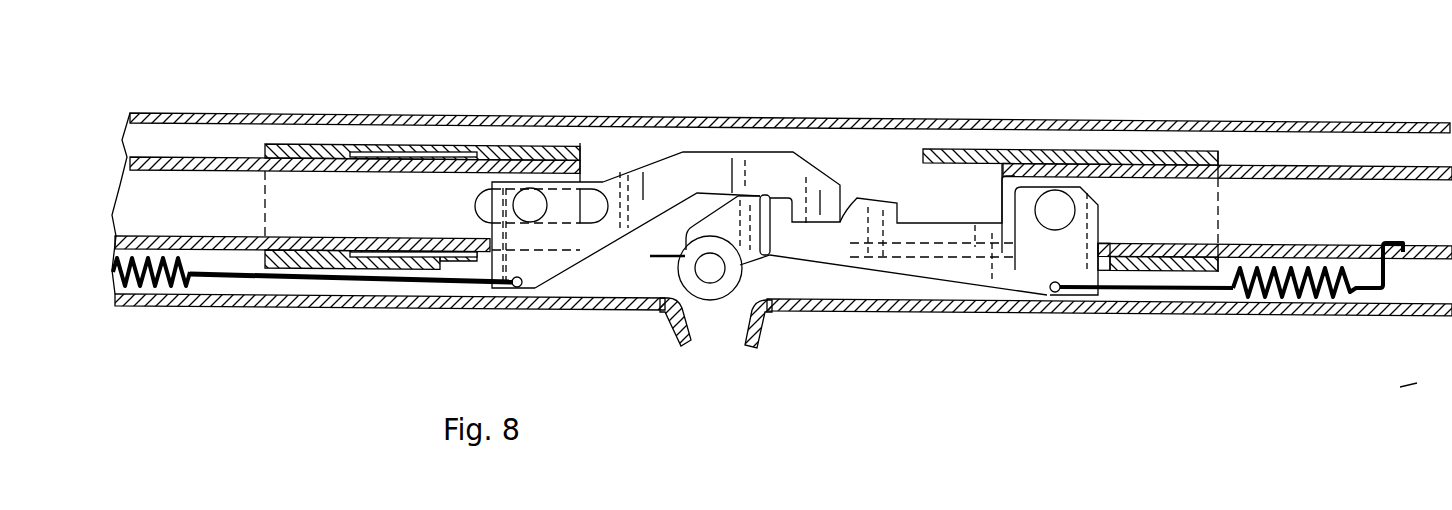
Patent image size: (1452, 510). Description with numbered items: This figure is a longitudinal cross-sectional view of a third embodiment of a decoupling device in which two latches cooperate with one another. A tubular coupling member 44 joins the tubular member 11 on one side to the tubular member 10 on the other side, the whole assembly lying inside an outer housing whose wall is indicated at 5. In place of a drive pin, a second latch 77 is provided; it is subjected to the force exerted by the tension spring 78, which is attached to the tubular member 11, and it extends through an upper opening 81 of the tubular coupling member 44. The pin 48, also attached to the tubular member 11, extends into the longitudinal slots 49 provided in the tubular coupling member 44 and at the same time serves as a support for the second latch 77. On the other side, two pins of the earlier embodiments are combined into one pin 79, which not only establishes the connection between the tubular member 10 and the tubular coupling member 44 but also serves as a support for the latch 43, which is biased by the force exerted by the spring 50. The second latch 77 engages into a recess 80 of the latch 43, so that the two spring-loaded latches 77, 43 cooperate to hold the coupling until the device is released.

The outer tube 5 is at (797, 125).
The tubular member 10 is at (1430, 257).
The tubular member 11 is at (205, 160).
The latch 43 is at (880, 217).
The tubular coupling member 44 is at (1148, 158).
The pin 48 is at (532, 202).
The longitudinal slots 49 is at (595, 207).
The spring 50 is at (1300, 272).
The second latch 77 is at (715, 172).
The tension spring 78 is at (183, 277).
The pin 79 is at (1055, 208).
The recess 80 is at (841, 222).
The upper opening 81 is at (860, 152).